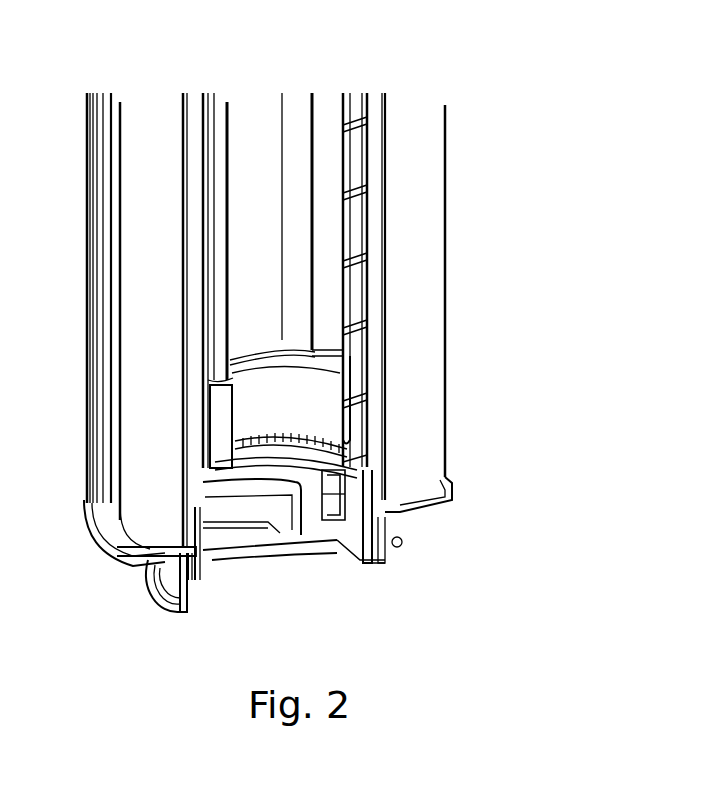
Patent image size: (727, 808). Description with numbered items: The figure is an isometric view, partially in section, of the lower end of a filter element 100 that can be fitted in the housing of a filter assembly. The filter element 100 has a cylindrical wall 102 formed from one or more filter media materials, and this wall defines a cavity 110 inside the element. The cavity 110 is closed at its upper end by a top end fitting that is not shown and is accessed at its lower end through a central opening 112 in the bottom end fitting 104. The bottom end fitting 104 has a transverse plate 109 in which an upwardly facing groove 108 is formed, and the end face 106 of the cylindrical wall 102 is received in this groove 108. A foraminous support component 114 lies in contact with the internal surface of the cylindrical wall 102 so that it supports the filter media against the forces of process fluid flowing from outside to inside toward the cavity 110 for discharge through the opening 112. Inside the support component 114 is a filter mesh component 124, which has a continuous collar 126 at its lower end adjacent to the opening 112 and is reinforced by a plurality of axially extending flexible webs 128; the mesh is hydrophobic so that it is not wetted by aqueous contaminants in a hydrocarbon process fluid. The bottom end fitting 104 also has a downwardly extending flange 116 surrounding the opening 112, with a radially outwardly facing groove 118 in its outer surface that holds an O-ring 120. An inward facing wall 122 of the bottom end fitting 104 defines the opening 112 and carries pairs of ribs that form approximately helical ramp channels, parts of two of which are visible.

The filter element 100 is at (474, 143).
The cylindrical wall 102 is at (138, 325).
The bottom end fitting 104 is at (393, 523).
The end face 106 is at (125, 522).
The groove 108 is at (133, 568).
The transverse plate 109 is at (438, 503).
The cavity 110 is at (252, 125).
The central opening 112 is at (296, 565).
The foraminous support component 114 is at (352, 108).
The downwardly extending flange 116 is at (190, 590).
The radially outwardly facing groove 118 is at (400, 548).
The O-ring 120 is at (150, 590).
The inward facing wall 122 is at (355, 553).
The filter mesh component 124 is at (300, 340).
The continuous collar 126 is at (318, 395).
The axially extending flexible webs 128 is at (305, 243).